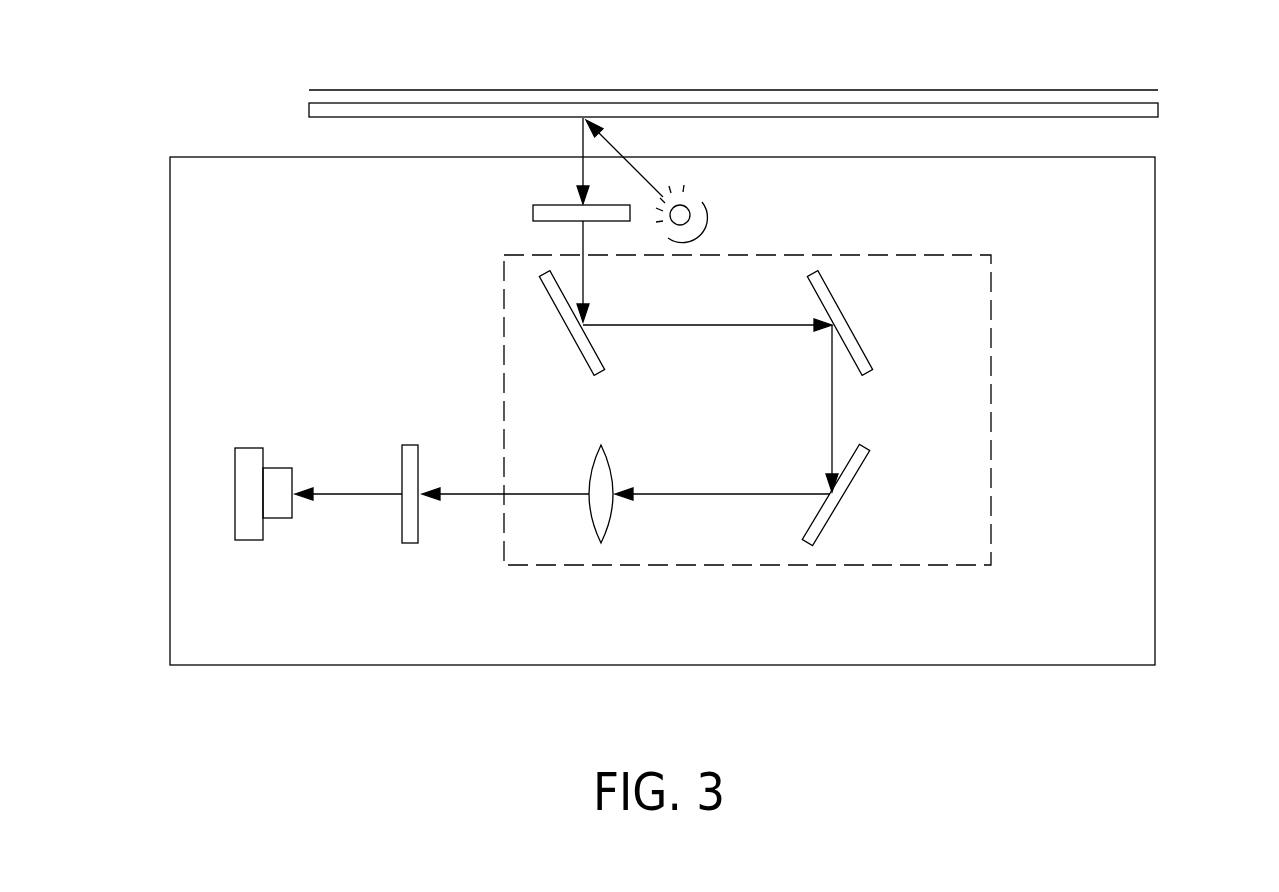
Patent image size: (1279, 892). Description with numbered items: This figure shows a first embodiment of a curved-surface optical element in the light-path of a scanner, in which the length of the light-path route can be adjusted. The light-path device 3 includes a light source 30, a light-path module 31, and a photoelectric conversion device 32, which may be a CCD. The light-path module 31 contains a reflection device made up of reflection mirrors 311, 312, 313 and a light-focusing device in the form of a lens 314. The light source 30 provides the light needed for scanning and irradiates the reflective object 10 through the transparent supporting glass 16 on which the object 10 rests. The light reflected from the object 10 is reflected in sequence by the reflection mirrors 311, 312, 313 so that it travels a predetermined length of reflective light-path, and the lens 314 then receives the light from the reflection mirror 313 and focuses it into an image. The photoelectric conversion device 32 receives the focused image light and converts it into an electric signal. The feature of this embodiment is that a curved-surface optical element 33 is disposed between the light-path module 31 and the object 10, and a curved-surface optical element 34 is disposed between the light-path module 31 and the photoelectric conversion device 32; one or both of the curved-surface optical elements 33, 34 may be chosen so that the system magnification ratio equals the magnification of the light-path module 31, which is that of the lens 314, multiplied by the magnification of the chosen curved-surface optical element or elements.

The light-path device 3 is at (1150, 370).
The reflective object 10 is at (1138, 90).
The transparent supporting glass 16 is at (1158, 107).
The light source 30 is at (705, 215).
The light-path module 31 is at (980, 372).
The photoelectric conversion device 32 is at (270, 518).
The curved-surface optical element 33 is at (533, 212).
The curved-surface optical element 34 is at (410, 535).
The reflection mirror 311 is at (563, 318).
The reflection mirror 312 is at (838, 318).
The reflection mirror 313 is at (843, 500).
The lens 314 is at (604, 520).